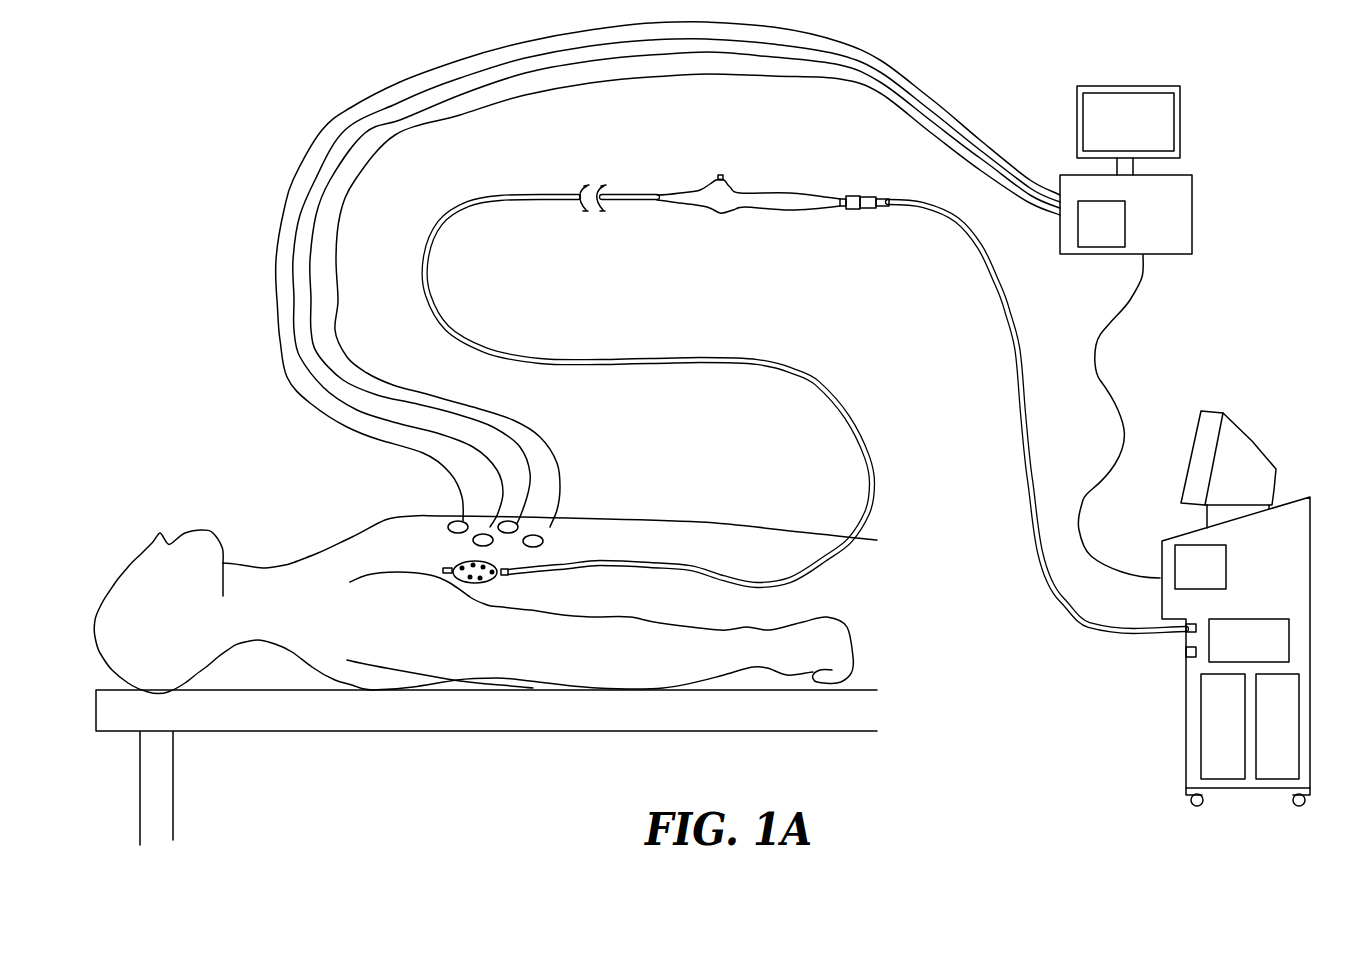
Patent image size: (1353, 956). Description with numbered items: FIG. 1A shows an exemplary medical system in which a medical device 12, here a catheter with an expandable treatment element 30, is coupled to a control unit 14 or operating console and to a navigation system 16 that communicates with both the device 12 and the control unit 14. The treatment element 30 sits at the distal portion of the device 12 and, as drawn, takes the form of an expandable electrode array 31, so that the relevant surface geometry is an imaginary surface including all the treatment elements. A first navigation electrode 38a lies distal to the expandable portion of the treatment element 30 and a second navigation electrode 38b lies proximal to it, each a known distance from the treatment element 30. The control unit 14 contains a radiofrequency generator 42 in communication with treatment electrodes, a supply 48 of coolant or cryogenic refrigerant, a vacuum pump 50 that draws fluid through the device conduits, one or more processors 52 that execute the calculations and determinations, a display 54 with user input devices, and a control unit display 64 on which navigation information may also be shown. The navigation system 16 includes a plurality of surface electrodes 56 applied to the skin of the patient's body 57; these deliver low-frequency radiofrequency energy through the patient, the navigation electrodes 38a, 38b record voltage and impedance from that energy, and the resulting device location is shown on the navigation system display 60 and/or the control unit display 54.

The medical device 12 is at (795, 193).
The control unit 14 is at (1260, 568).
The navigation system 16 is at (1142, 215).
The treatment element 30 is at (465, 562).
The expandable electrode array 31 is at (471, 583).
The first navigation electrode 38a is at (447, 575).
The second navigation electrode 38b is at (505, 576).
The radiofrequency generator 42 is at (1235, 653).
The fluid supply 48 is at (1209, 739).
The vacuum pump 50 is at (1263, 739).
The processor 52 is at (1087, 237).
The display 54 is at (1201, 441).
The surface electrodes 56 is at (472, 541).
The patient's body 57 is at (290, 557).
The navigation system display 60 is at (1112, 132).
The control unit display 64 is at (1186, 579).